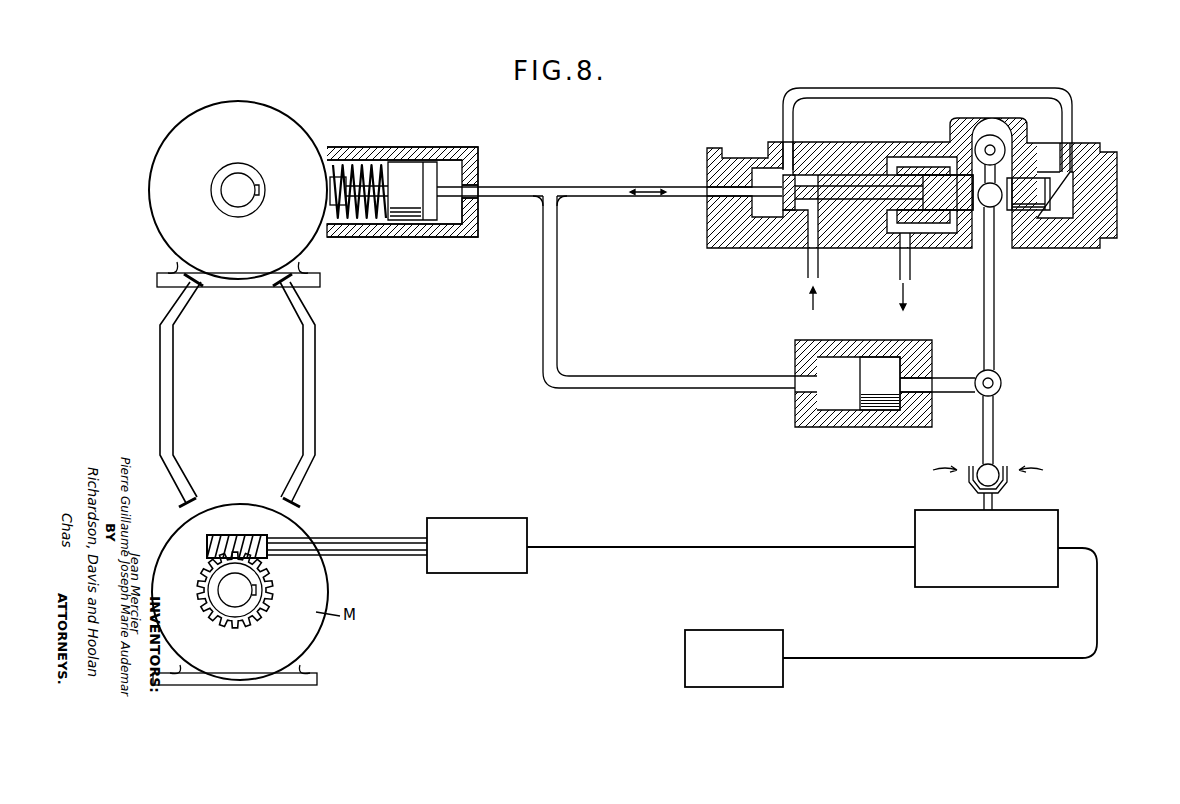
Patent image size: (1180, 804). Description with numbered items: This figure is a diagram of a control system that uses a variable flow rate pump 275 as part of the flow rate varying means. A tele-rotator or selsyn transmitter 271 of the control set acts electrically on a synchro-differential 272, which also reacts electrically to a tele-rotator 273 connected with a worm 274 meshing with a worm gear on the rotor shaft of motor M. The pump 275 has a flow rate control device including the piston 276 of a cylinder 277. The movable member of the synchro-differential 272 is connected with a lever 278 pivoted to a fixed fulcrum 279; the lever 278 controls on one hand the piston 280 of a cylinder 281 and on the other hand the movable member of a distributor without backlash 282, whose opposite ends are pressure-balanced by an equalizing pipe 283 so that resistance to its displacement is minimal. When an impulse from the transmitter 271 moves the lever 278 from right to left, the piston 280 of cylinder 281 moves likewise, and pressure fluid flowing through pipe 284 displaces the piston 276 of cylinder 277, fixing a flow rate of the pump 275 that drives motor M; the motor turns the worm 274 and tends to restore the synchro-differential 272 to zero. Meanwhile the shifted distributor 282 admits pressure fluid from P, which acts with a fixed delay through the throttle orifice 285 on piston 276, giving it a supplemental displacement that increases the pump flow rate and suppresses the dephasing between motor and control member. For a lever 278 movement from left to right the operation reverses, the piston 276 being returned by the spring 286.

The selsyn transmitter 271 is at (758, 629).
The synchro-differential 272 is at (1058, 510).
The tele-rotator 273 is at (492, 573).
The worm 274 is at (237, 535).
The variable flow rate pump 275 is at (277, 113).
The piston 276 is at (377, 178).
The cylinder 277 is at (427, 147).
The lever 278 is at (993, 422).
The fixed fulcrum 279 is at (1001, 132).
The piston 280 is at (875, 403).
The cylinder 281 is at (810, 418).
The distributor without backlash 282 is at (842, 183).
The equalizing pipe 283 is at (885, 90).
The pipe 284 is at (540, 283).
The throttle orifice 285 is at (612, 190).
The spring 286 is at (370, 215).